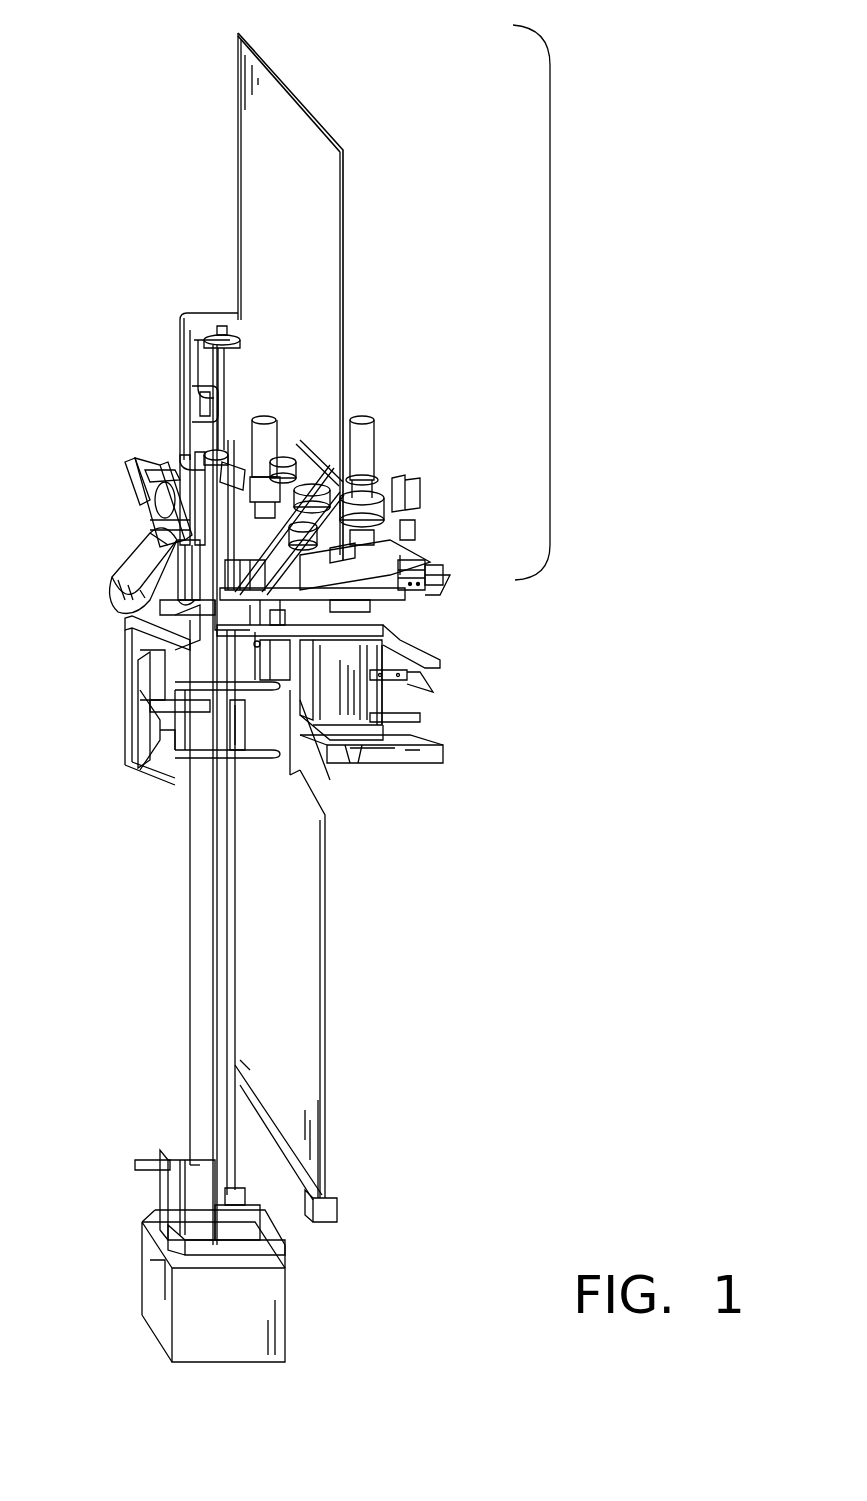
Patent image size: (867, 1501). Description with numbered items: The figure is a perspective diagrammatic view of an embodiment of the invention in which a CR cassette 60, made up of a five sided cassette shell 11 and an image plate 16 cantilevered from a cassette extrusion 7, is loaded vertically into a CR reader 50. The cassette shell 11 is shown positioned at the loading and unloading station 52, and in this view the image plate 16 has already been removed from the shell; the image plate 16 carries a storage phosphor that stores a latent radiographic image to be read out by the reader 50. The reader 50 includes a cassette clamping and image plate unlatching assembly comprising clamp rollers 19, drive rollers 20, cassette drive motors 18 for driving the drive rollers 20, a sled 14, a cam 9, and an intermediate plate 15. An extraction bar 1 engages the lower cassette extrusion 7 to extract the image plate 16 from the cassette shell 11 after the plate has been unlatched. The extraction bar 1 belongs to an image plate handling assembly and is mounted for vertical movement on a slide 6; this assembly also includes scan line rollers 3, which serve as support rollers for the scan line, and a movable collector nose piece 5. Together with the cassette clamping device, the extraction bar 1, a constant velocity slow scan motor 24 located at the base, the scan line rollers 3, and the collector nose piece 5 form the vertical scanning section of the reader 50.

The extraction bar 1 is at (340, 1213).
The scan line rollers 3 is at (168, 690).
The collector nose piece 5 is at (305, 720).
The slide 6 is at (190, 915).
The cassette extrusion 7 is at (330, 1190).
The cam 9 is at (183, 470).
The cassette shell 11 is at (238, 168).
The sled 14 is at (443, 575).
The intermediate plate 15 is at (430, 650).
The image plate 16 is at (325, 945).
The cassette drive motors 18 is at (262, 412).
The clamp rollers 19 is at (368, 487).
The drive rollers 20 is at (197, 448).
The constant velocity slow scan motor 24 is at (140, 1235).
The CR reader 50 is at (497, 845).
The loading and unloading station 52 is at (133, 283).
The CR cassette 60 is at (557, 315).